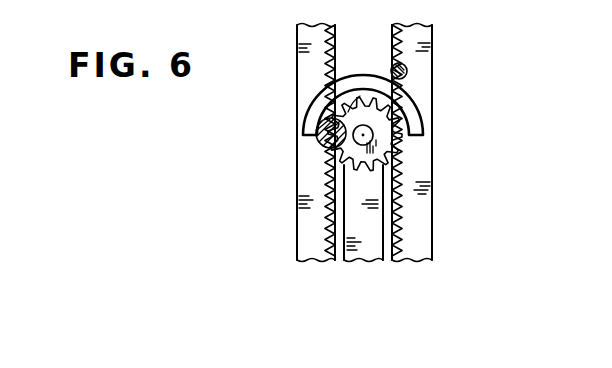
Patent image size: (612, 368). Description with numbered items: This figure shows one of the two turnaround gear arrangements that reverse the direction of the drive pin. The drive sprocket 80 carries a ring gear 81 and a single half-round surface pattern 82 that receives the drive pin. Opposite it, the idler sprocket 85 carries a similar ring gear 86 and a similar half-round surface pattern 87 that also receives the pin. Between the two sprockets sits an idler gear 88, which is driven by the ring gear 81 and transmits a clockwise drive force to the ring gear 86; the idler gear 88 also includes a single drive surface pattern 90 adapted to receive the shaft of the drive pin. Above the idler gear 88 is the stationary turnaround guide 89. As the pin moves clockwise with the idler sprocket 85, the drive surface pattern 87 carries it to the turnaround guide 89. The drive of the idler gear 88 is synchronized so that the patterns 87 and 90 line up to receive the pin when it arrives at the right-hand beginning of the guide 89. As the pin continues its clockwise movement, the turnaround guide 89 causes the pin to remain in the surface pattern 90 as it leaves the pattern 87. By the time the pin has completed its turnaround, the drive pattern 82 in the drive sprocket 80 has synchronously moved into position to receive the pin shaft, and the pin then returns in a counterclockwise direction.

The drive sprocket 80 is at (298, 220).
The ring gear 81 is at (338, 263).
The half-round surface pattern 82 is at (320, 143).
The idler sprocket 85 is at (432, 225).
The ring gear 86 is at (395, 258).
The half-round surface pattern 87 is at (407, 74).
The idler gear 88 is at (380, 138).
The stationary turnaround guide 89 is at (418, 110).
The drive surface pattern 90 is at (348, 112).